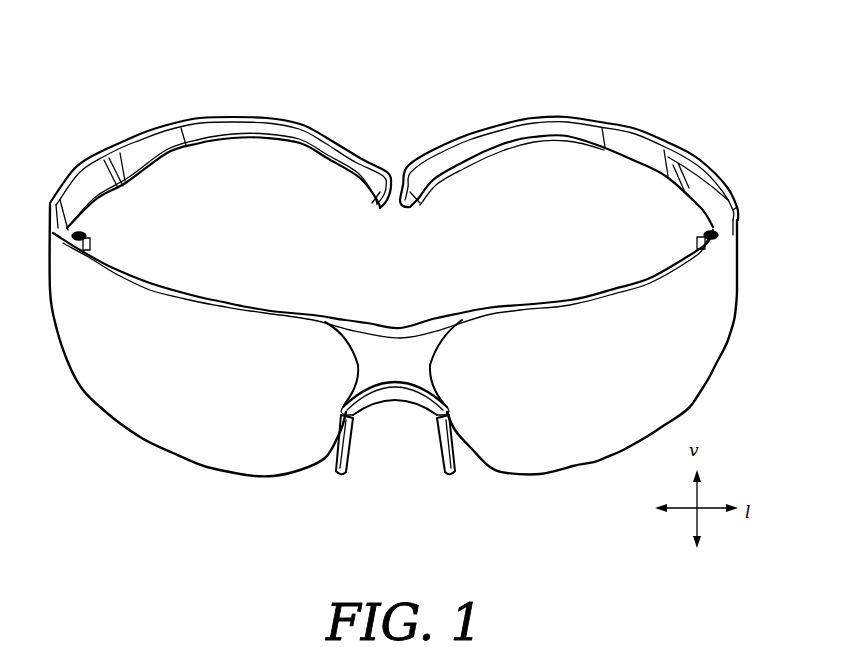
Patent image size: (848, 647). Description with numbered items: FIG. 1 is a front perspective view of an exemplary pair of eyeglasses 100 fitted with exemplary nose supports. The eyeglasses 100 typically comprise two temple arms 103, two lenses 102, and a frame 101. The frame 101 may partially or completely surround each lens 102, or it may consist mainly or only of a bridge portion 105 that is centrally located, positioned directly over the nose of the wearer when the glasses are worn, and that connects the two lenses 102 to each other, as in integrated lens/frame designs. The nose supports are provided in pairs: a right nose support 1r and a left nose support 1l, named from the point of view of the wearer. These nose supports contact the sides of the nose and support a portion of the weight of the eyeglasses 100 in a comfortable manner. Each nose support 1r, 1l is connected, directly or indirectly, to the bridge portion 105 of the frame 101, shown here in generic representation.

The eyeglasses 100 is at (125, 42).
The frame 101 is at (333, 425).
The lens 102 is at (214, 382).
The temple arm 103 is at (653, 133).
The bridge portion 105 is at (388, 352).
The right nose support 1r is at (353, 460).
The left nose support 1l is at (433, 467).